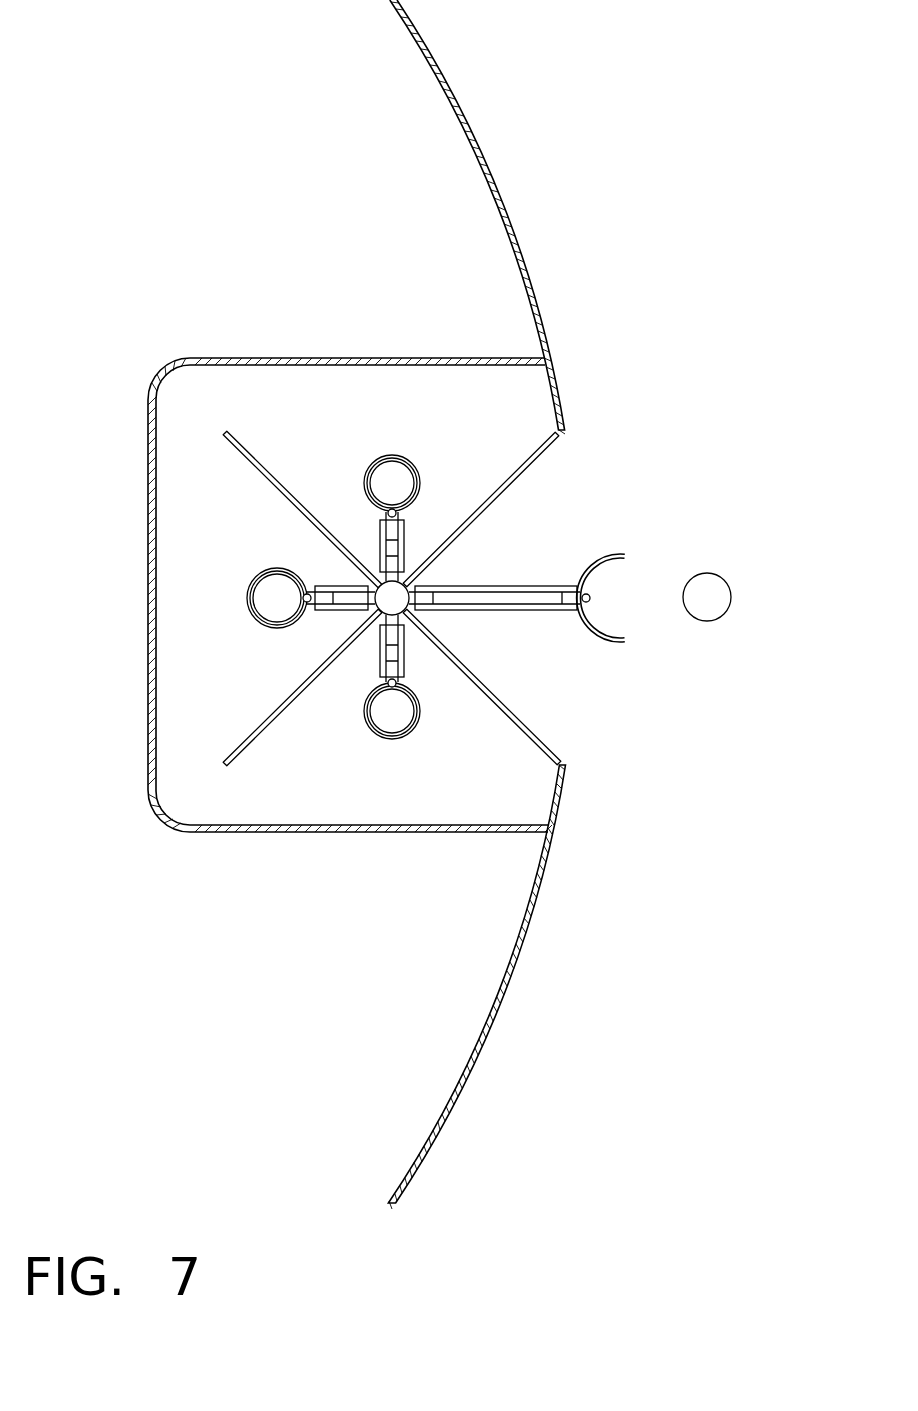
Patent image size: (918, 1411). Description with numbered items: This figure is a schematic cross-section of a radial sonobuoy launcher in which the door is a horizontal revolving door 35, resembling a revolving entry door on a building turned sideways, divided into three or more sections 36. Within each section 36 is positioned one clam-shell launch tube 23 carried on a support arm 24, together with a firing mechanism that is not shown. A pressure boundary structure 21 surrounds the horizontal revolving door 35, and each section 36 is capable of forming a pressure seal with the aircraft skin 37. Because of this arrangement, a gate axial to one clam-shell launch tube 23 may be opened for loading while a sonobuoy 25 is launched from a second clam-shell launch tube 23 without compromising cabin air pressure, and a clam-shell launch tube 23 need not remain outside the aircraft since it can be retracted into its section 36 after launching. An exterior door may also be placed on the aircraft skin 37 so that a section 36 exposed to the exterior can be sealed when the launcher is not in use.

The pressure boundary structure 21 is at (148, 760).
The clam-shell launch tube 23 is at (616, 534).
The support arm 24 is at (406, 543).
The sonobuoy 25 is at (730, 575).
The horizontal revolving door 35 is at (255, 458).
The section 36 is at (195, 543).
The aircraft skin 37 is at (515, 228).